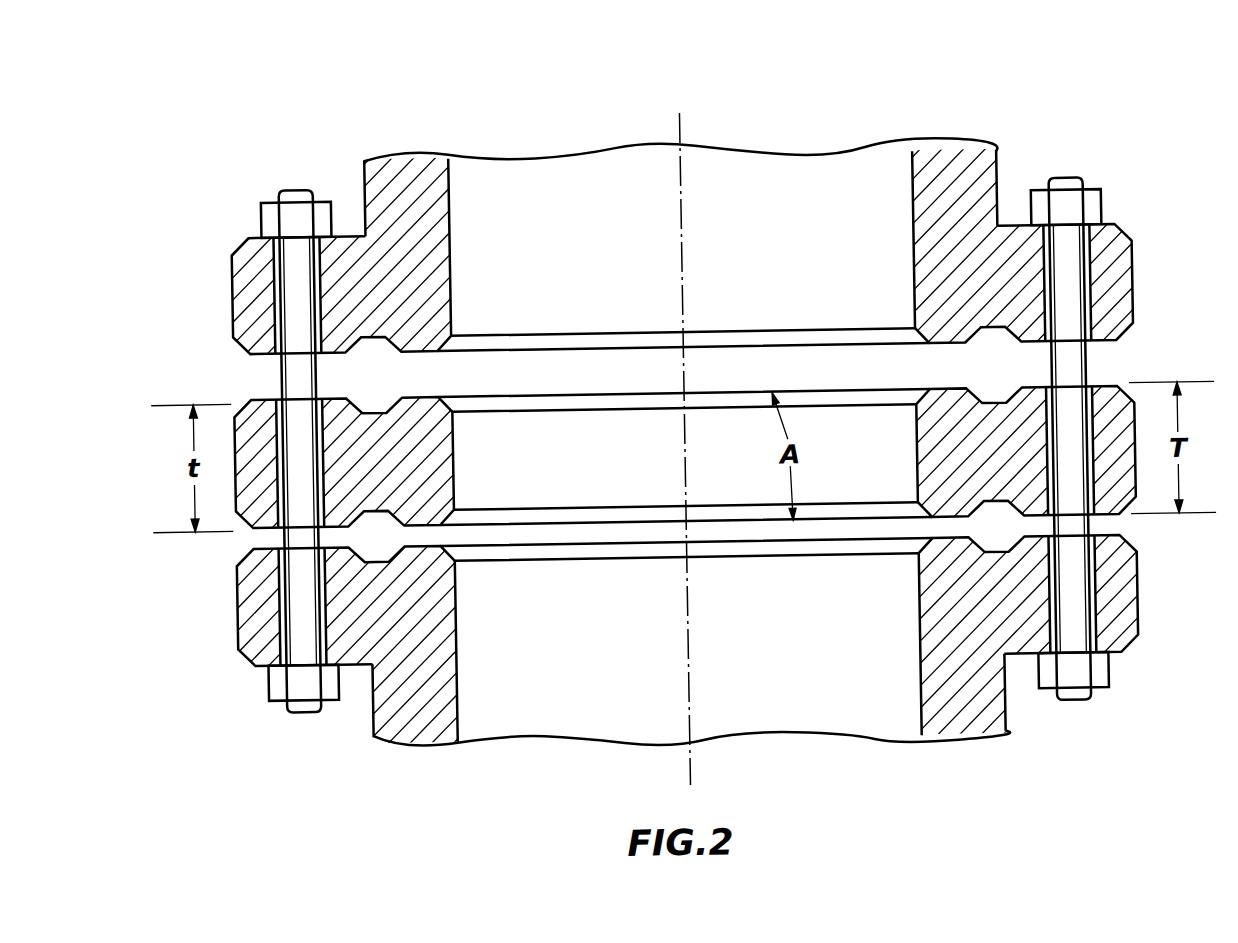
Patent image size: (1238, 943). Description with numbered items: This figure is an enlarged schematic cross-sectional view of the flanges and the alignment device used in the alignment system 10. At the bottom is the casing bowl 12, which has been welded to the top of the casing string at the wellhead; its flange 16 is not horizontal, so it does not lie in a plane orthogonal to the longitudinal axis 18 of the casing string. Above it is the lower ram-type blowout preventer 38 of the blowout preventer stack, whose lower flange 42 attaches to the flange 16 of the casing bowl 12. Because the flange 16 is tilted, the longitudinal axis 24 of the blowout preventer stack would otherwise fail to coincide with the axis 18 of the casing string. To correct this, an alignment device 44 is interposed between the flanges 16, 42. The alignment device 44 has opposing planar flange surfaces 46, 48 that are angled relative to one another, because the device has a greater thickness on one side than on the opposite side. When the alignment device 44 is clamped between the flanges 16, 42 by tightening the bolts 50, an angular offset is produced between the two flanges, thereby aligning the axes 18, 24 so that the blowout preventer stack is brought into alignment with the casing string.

The alignment system 10 is at (1136, 89).
The casing bowl 12 is at (368, 731).
The flange 16 is at (1139, 606).
The longitudinal axis 18 is at (685, 758).
The longitudinal axis 24 is at (687, 128).
The ram-type blowout preventer 38 is at (1002, 170).
The lower flange 42 is at (1140, 288).
The alignment device 44 is at (1105, 390).
The planar flange surface 46 is at (431, 394).
The planar flange surface 48 is at (418, 530).
The bolts 50 is at (292, 185).